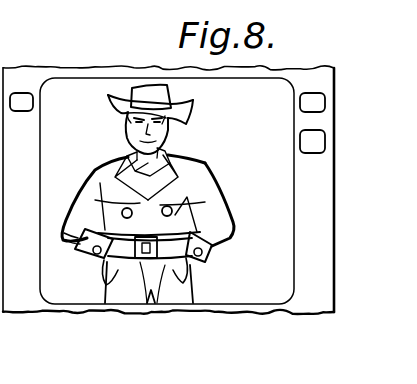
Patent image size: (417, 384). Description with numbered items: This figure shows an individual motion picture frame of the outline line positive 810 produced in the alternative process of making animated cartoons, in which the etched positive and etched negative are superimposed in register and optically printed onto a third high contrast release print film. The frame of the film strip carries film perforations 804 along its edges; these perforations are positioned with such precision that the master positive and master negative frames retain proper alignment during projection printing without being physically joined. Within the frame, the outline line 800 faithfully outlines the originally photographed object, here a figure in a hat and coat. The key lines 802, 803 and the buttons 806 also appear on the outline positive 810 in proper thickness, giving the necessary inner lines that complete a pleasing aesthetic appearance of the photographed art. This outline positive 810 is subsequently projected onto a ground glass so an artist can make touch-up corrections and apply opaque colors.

The outline line 800 is at (216, 191).
The key line 802 is at (200, 168).
The key line 803 is at (122, 160).
The film perforations 804 is at (20, 96).
The buttons 806 is at (122, 212).
The outline positive 810 is at (263, 289).